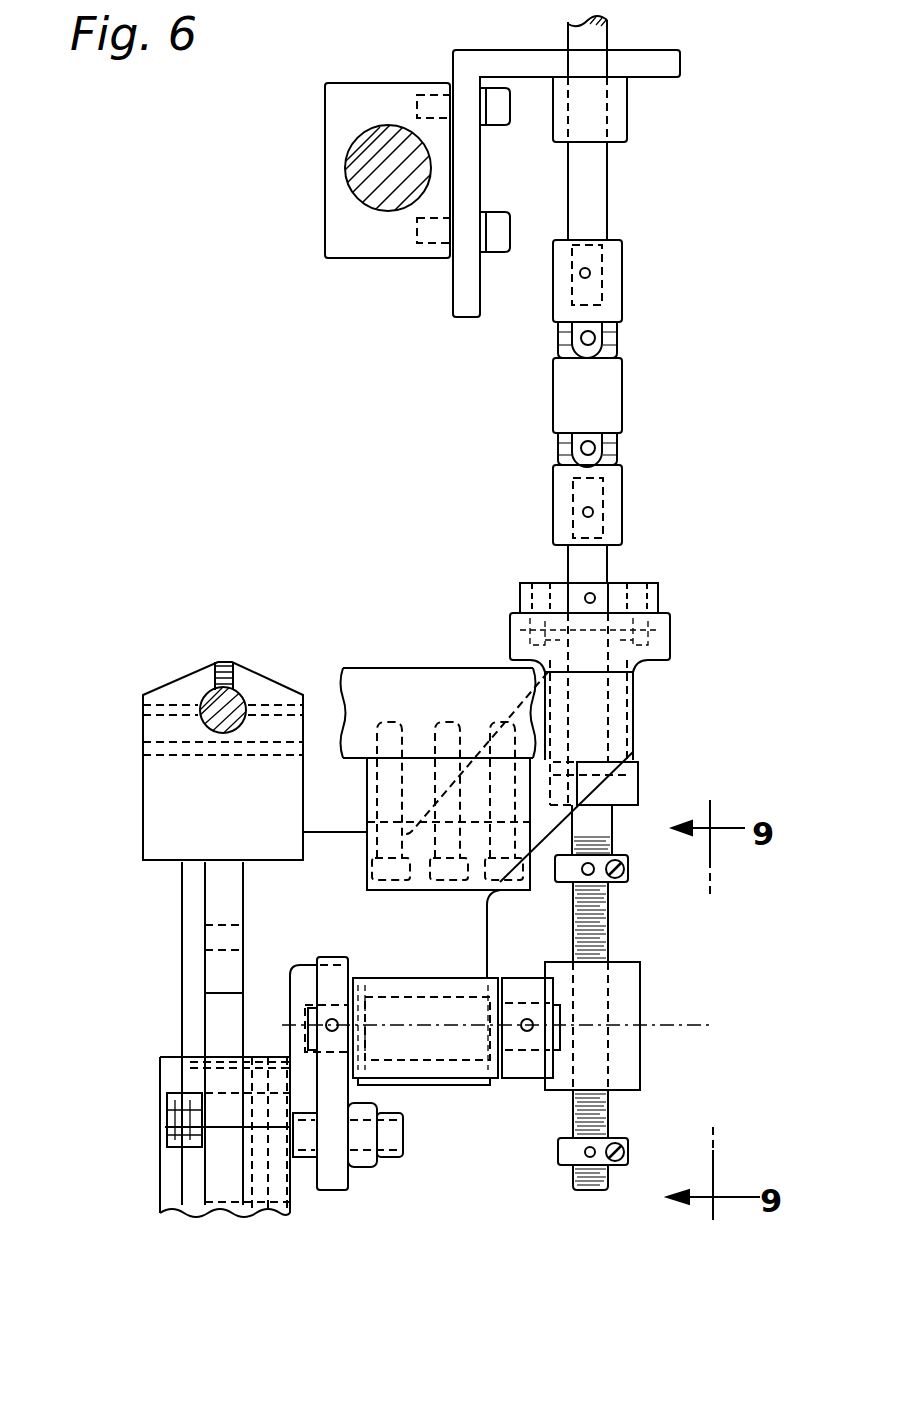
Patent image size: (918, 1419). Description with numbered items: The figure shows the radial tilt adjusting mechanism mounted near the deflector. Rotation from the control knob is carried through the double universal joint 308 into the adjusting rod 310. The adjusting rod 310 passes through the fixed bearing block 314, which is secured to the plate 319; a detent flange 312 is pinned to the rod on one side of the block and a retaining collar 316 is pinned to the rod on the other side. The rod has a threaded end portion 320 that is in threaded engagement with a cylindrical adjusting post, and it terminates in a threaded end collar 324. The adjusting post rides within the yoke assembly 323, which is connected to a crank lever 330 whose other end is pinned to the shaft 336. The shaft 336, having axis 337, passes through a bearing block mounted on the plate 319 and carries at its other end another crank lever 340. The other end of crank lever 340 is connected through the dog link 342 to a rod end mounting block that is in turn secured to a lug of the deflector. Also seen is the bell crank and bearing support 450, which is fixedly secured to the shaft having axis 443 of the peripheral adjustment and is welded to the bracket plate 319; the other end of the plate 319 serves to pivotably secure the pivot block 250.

The double universal joint 308 is at (607, 400).
The detent flange 312 is at (663, 598).
The fixed bearing block 314 is at (637, 725).
The retaining collar 316 is at (640, 790).
The adjusting rod 310 is at (600, 818).
The plate 319 is at (437, 948).
The axis 337 is at (615, 1025).
The yoke assembly 323 is at (628, 1063).
The threaded end portion 320 is at (610, 1115).
The threaded end collar 324 is at (628, 1155).
The shaft 336 is at (450, 1055).
The crank lever 330 is at (527, 1070).
The crank lever 340 is at (340, 1180).
The dog link 342 is at (380, 1165).
The pivot block 250 is at (177, 1180).
The bell crank and bearing support 450 is at (244, 820).
The axis 443 is at (243, 700).